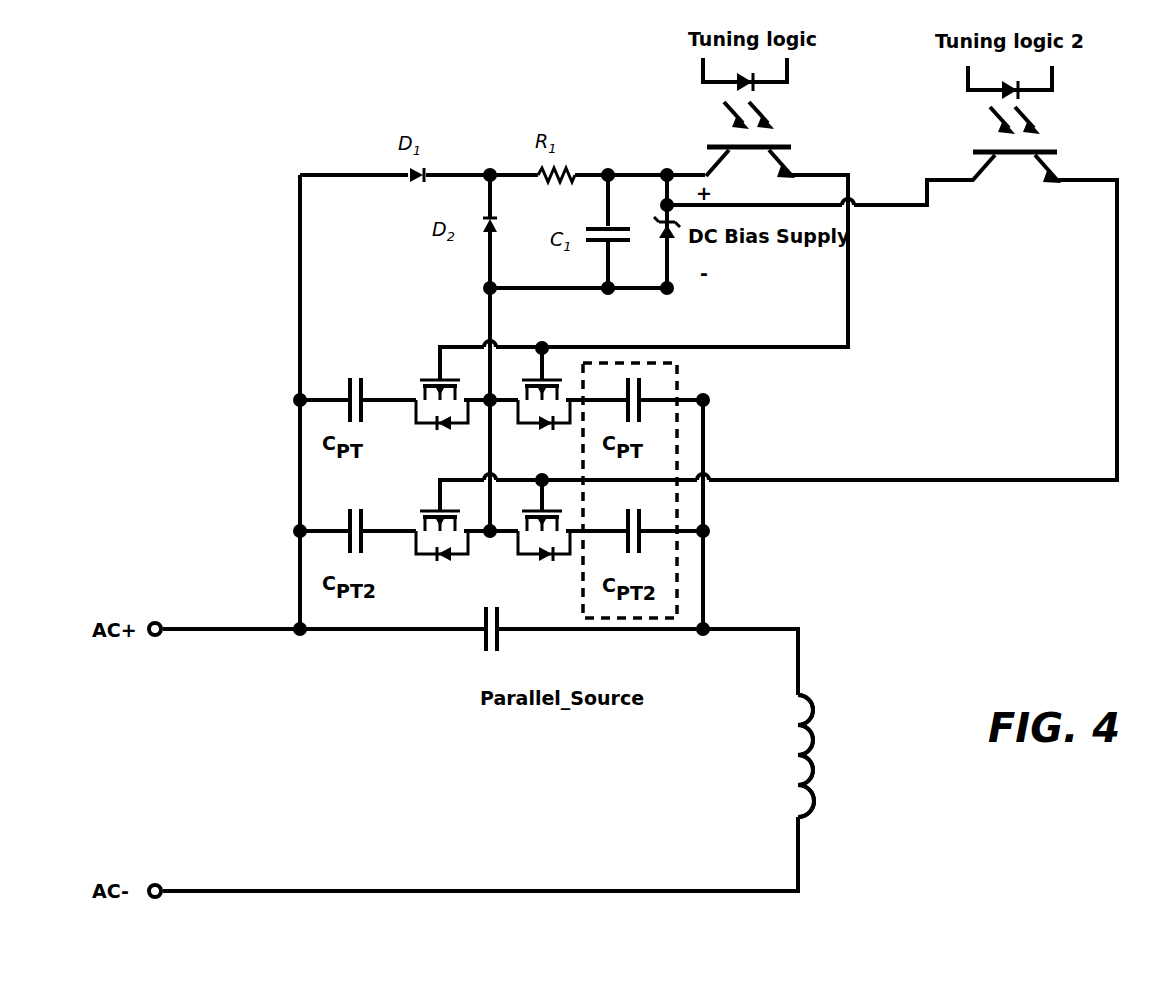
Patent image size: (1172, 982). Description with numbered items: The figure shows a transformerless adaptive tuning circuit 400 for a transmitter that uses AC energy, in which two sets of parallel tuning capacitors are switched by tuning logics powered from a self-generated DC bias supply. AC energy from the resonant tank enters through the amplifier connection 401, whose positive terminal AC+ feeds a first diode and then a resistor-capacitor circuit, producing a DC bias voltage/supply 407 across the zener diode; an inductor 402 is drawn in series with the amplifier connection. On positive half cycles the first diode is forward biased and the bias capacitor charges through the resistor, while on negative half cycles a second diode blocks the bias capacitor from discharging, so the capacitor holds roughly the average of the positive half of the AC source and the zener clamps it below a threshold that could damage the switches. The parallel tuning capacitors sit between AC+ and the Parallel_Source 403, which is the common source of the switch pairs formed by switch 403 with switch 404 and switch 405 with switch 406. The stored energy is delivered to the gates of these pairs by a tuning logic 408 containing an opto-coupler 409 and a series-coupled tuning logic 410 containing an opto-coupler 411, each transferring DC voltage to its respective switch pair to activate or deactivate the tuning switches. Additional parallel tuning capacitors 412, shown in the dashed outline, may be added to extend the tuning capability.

The adaptive tuning circuit 400 is at (145, 360).
The amplifier connection 401 is at (118, 772).
The inductor 402 is at (834, 756).
The switch / Parallel_Source 403 is at (566, 665).
The switch 404 is at (544, 423).
The switch 405 is at (442, 553).
The switch 406 is at (544, 553).
The DC bias voltage/supply 407 is at (721, 246).
The tuning logic 408 is at (777, 60).
The opto-coupler 409 is at (771, 138).
The tuning logic 410 is at (1041, 64).
The opto-coupler 411 is at (1041, 142).
The additional parallel tuning capacitors 412 is at (676, 370).